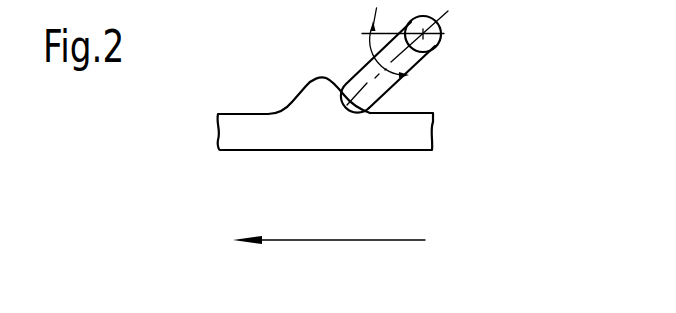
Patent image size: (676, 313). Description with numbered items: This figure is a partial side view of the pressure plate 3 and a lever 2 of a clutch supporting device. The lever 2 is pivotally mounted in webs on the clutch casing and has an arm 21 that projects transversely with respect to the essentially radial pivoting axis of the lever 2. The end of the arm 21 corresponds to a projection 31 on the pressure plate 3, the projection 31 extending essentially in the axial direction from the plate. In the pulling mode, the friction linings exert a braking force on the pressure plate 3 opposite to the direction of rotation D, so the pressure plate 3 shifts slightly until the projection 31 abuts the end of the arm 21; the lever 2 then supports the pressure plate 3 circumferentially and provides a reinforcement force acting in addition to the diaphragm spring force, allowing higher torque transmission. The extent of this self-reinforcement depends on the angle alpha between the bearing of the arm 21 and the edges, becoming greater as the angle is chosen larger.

The lever 2 is at (444, 34).
The arm 21 is at (383, 87).
The pressure plate 3 is at (305, 136).
The projection 31 is at (310, 95).